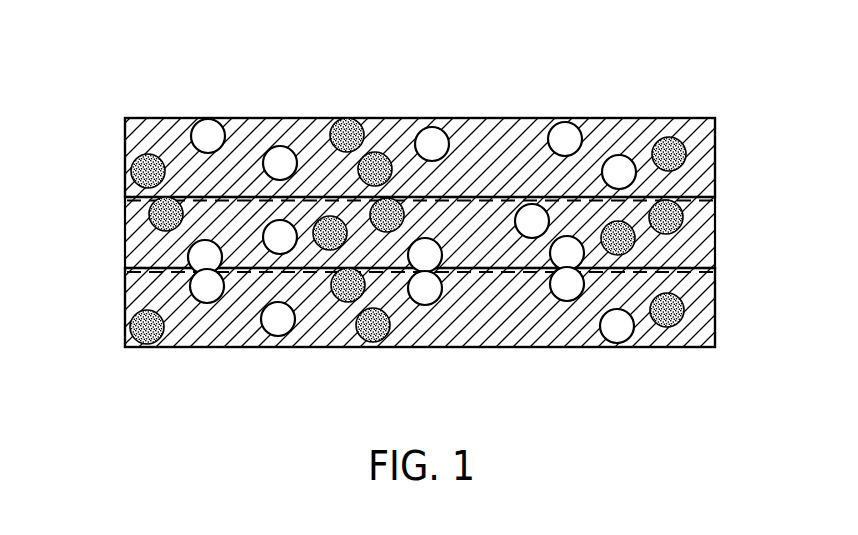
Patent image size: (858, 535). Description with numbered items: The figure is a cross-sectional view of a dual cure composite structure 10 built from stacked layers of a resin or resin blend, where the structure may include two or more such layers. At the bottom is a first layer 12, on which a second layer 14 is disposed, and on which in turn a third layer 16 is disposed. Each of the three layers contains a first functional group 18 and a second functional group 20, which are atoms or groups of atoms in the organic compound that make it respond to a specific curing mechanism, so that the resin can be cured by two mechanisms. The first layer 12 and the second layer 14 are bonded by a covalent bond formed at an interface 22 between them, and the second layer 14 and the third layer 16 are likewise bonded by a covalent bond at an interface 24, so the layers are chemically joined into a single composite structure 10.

The dual cure composite structure 10 is at (449, 204).
The first layer 12 is at (715, 307).
The second layer 14 is at (715, 230).
The third layer 16 is at (715, 153).
The first functional group 18 is at (612, 347).
The second functional group 20 is at (363, 347).
The interface 22 is at (125, 281).
The interface 24 is at (125, 207).